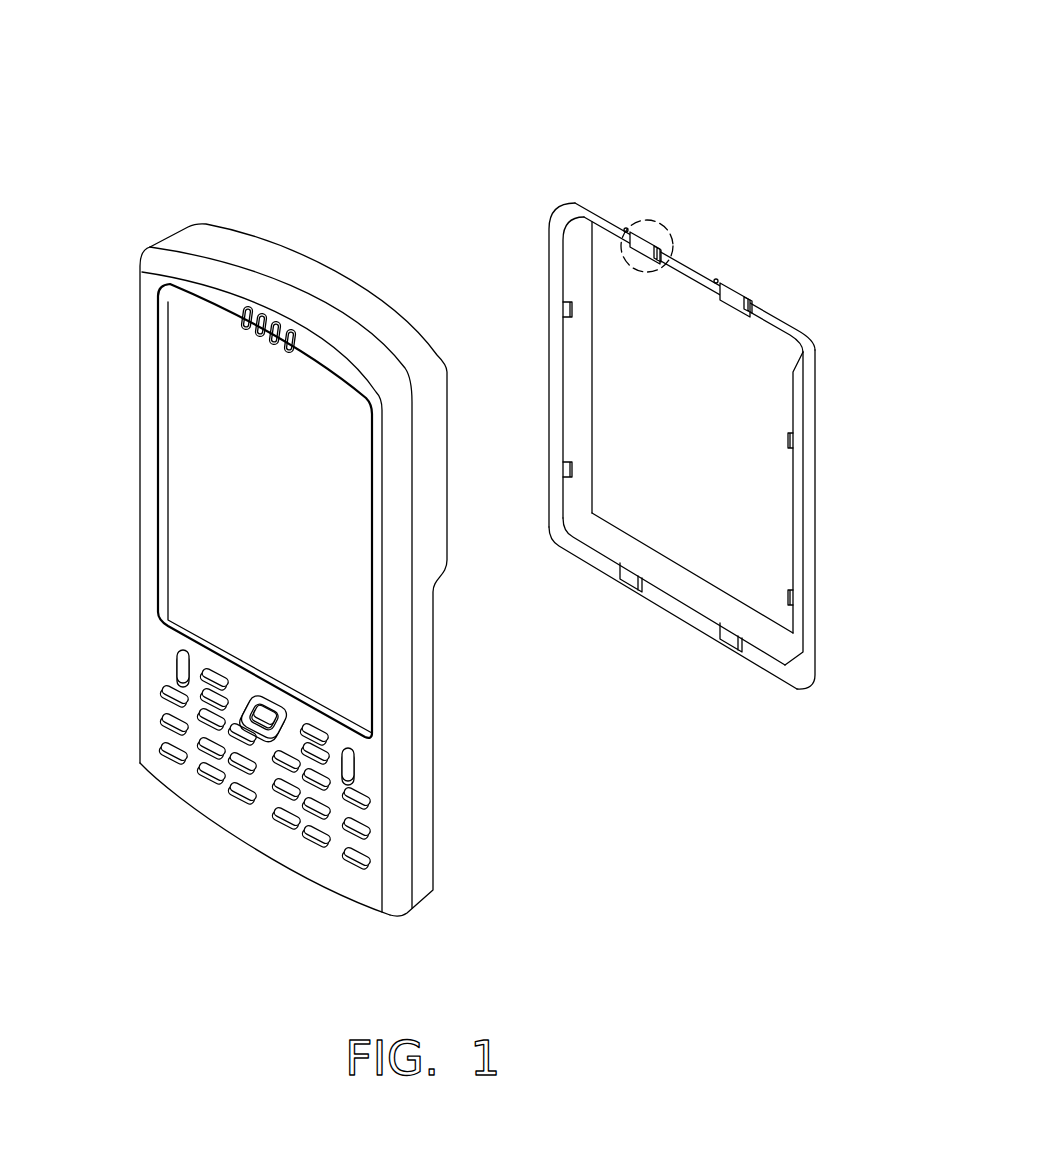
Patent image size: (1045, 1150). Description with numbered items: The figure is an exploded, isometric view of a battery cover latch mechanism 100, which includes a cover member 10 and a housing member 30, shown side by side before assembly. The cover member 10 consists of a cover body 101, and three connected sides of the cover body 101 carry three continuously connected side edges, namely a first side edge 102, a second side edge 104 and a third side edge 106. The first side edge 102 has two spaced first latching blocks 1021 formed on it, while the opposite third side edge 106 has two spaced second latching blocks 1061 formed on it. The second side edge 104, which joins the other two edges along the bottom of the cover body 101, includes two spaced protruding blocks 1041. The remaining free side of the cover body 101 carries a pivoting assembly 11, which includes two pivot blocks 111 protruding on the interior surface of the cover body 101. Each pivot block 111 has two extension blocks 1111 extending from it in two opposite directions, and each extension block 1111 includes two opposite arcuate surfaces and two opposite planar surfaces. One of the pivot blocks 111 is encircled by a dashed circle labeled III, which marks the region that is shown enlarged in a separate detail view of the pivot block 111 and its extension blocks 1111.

The battery cover latch mechanism 100 is at (419, 55).
The housing member 30 is at (150, 186).
The cover member 10 is at (598, 170).
The first side edge 102 is at (549, 255).
The first latching block 1021 is at (563, 307).
The cover body 101 is at (783, 326).
The third side edge 106 is at (810, 513).
The second latching block 1061 is at (790, 442).
The second side edge 104 is at (670, 610).
The protruding block 1041 is at (628, 581).
The pivoting assembly 11 is at (725, 173).
The pivot block 111 is at (643, 243).
The extension block 1111 is at (753, 302).
The detail view indicator III is at (645, 225).